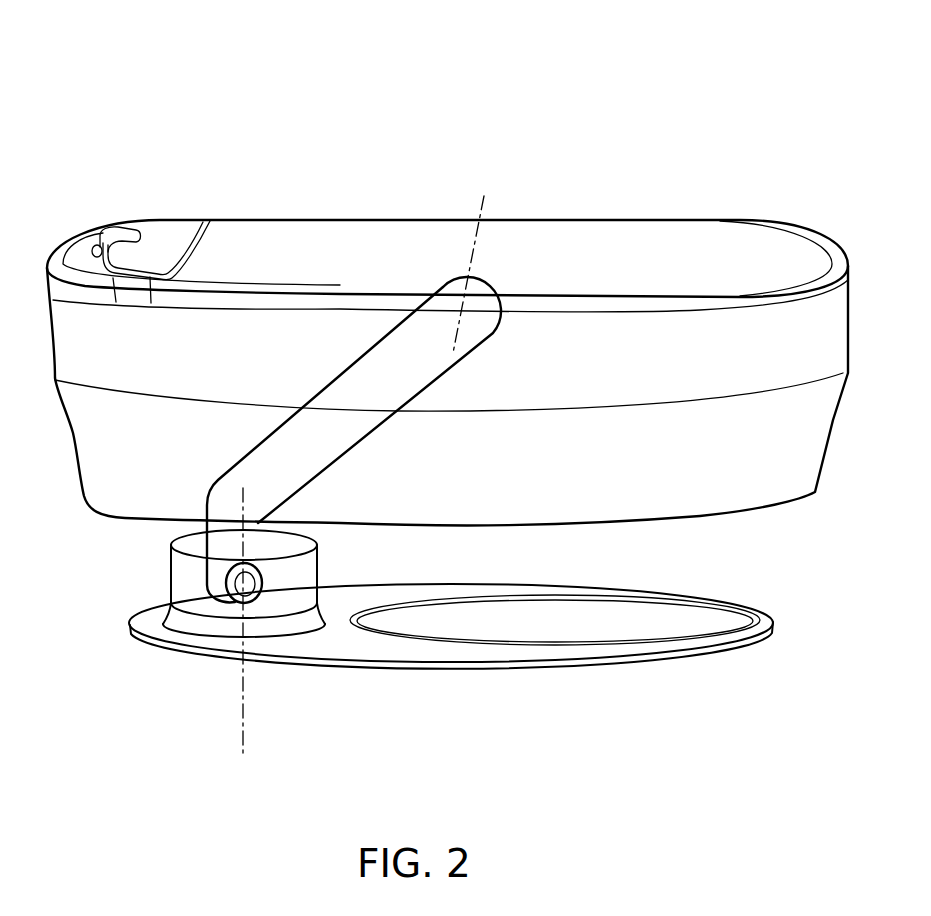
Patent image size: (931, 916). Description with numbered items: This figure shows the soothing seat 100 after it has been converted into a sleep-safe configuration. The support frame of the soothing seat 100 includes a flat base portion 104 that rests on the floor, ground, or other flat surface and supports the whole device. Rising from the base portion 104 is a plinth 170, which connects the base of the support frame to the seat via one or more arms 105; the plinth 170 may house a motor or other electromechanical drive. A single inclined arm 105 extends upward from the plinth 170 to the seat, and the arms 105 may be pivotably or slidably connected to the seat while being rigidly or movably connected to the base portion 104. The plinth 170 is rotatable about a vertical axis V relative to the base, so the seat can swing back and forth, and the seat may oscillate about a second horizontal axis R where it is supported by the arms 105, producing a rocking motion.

The soothing seat 100 is at (216, 74).
The base portion 104 is at (363, 667).
The arms 105 is at (409, 340).
The plinth 170 is at (190, 572).
The second horizontal axis R is at (474, 261).
The vertical axis V is at (241, 640).